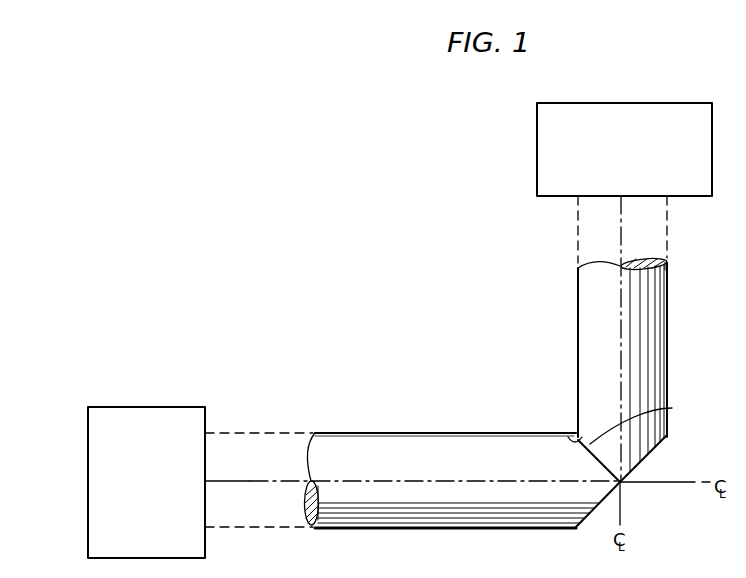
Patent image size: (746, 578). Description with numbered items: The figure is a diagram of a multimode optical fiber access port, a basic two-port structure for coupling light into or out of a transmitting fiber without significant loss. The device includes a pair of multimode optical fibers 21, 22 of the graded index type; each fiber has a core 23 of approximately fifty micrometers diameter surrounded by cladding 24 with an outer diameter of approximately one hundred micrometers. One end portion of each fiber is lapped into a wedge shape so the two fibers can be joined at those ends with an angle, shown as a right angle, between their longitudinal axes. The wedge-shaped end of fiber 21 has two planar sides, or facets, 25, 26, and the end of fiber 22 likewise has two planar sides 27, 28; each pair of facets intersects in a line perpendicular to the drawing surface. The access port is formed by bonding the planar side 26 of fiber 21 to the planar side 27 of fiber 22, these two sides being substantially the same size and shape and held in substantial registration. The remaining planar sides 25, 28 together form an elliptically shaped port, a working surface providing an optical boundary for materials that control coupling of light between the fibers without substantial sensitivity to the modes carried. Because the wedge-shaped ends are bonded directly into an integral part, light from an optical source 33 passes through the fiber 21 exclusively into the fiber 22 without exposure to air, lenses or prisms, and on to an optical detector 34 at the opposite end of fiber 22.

The multimode optical fiber 21 is at (396, 445).
The multimode optical fiber 22 is at (590, 313).
The core 23 is at (309, 497).
The cladding 24 is at (311, 524).
The planar side 25 is at (601, 509).
The planar side 26 is at (573, 436).
The planar side 27 is at (672, 408).
The planar side 28 is at (654, 449).
The optical source 33 is at (150, 407).
The optical detector 34 is at (537, 148).